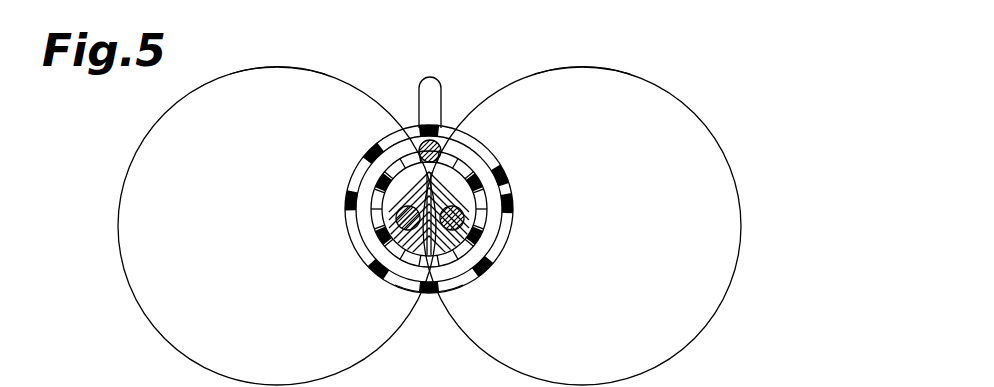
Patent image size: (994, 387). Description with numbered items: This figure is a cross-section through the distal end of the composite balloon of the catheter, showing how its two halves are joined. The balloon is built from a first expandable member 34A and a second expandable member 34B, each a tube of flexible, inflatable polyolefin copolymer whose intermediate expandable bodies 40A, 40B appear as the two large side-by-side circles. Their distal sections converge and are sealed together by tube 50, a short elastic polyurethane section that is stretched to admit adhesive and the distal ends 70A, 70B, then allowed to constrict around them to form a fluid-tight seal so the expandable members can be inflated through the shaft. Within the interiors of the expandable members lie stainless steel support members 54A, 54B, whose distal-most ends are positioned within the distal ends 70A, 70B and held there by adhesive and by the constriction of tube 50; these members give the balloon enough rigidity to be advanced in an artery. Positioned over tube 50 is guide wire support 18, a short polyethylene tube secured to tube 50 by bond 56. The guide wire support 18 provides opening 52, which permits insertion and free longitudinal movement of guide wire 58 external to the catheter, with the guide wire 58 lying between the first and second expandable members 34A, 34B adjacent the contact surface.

The guide wire support 18 is at (488, 150).
The first expandable member 34A is at (582, 64).
The second expandable member 34B is at (276, 67).
The intermediate expandable body 40A is at (741, 179).
The intermediate expandable body 40B is at (118, 229).
The tube 50 is at (424, 292).
The opening 52 is at (392, 126).
The support member 54A is at (470, 236).
The support member 54B is at (394, 217).
The bond 56 is at (378, 212).
The guide wire 58 is at (432, 77).
The distal end 70A is at (485, 183).
The distal end 70B is at (400, 198).